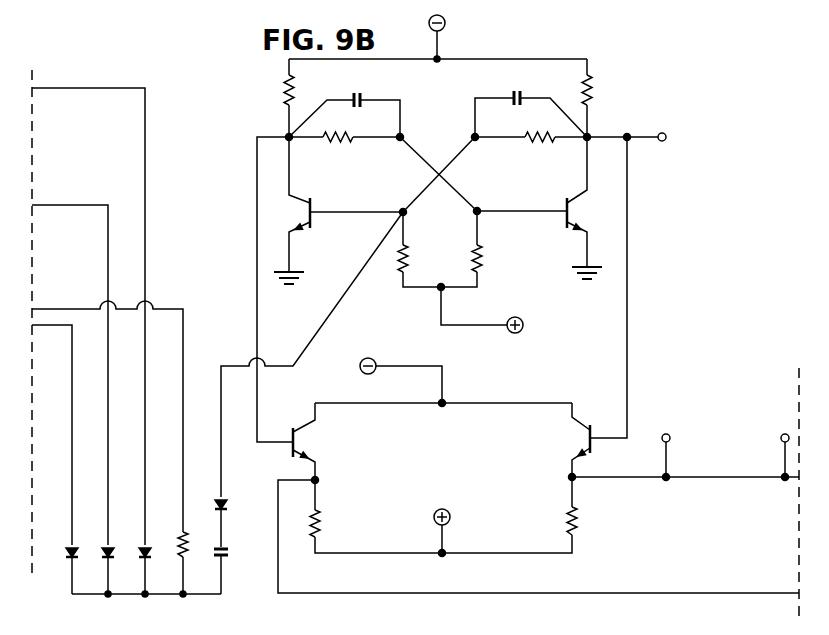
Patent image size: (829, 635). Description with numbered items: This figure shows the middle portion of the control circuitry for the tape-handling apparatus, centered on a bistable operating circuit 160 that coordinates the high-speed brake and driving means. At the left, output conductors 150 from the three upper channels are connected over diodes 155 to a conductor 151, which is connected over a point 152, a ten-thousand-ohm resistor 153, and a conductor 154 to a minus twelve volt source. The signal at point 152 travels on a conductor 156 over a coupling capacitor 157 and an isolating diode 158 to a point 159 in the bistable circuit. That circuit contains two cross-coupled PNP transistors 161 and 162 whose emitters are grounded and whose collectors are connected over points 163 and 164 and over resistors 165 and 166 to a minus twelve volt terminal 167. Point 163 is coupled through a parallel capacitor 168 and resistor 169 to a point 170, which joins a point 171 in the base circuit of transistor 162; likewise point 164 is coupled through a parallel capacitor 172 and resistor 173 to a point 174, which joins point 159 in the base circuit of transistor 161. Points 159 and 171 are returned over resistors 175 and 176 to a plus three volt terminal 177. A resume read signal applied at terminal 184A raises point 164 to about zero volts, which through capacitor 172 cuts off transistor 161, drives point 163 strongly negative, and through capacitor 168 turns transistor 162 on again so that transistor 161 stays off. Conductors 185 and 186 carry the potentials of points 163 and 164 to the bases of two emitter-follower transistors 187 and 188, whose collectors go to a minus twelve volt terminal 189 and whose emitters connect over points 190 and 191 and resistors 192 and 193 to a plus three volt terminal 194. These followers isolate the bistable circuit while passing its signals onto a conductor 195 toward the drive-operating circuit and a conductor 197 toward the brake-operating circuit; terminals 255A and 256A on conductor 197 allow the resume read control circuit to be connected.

The output conductors 150 is at (88, 88).
The conductor 151 is at (130, 594).
The point 152 is at (186, 596).
The resistor 153 is at (180, 542).
The conductor 154 is at (102, 308).
The diodes 155 is at (68, 550).
The conductor 156 is at (216, 382).
The coupling capacitor 157 is at (224, 550).
The isolating diode 158 is at (223, 504).
The point 159 is at (401, 210).
The bistable operating circuit 160 is at (498, 56).
The transistor 161 is at (312, 206).
The transistor 162 is at (566, 200).
The point 163 is at (287, 136).
The point 164 is at (590, 132).
The resistor 165 is at (284, 90).
The resistor 166 is at (586, 84).
The terminal 167 is at (445, 24).
The capacitor 168 is at (352, 100).
The resistor 169 is at (336, 140).
The point 170 is at (398, 136).
The point 171 is at (477, 209).
The capacitor 172 is at (517, 94).
The resistor 173 is at (521, 140).
The point 174 is at (475, 137).
The resistor 175 is at (408, 248).
The resistor 176 is at (474, 256).
The terminal 177 is at (524, 312).
The terminal 184A is at (660, 132).
The conductor 185 is at (254, 244).
The conductor 186 is at (627, 320).
The transistor 187 is at (290, 428).
The transistor 188 is at (596, 442).
The terminal 189 is at (362, 358).
The point 190 is at (317, 480).
The point 191 is at (570, 477).
The resistor 192 is at (322, 522).
The resistor 193 is at (566, 525).
The terminal 194 is at (437, 510).
The conductor 195 is at (618, 592).
The conductor 197 is at (688, 478).
The terminal 255A is at (664, 434).
The terminal 256A is at (786, 434).